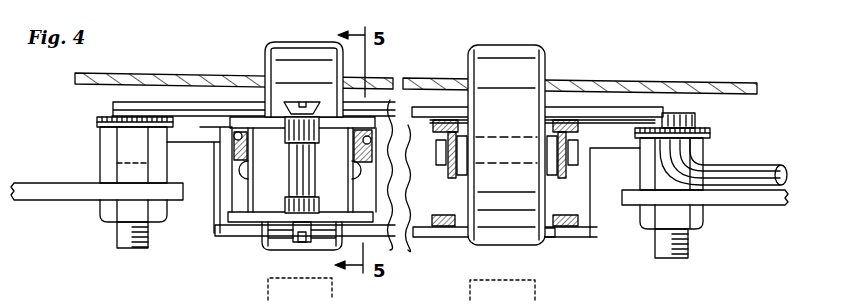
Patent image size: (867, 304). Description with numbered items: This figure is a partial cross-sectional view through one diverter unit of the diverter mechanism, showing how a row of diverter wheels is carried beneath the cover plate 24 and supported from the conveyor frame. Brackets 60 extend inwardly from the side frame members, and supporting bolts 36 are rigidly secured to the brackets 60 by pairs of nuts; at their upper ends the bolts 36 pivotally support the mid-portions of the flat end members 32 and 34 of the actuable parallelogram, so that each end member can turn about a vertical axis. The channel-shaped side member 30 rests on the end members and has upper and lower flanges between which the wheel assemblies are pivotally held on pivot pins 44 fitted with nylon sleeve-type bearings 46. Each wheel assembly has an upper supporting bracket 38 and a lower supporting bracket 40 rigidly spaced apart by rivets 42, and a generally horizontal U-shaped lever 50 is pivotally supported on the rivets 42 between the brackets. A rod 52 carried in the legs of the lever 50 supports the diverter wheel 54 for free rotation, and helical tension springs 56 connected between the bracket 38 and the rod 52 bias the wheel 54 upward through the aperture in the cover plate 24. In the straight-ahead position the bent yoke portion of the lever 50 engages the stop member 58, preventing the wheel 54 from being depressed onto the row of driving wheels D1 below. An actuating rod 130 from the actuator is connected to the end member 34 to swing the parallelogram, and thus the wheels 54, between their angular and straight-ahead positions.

The cover plate 24 is at (629, 83).
The side member 30 is at (420, 232).
The end member 32 is at (97, 122).
The end member 34 is at (710, 132).
The bearing bolt 36 is at (150, 238).
The upper supporting bracket 38 is at (232, 120).
The lower supporting bracket 40 is at (246, 237).
The rivet 42 is at (235, 216).
The pivot pin 44 is at (296, 248).
The sleeve-type bearing 46 is at (333, 203).
The U-shaped lever 50 is at (240, 190).
The rod 52 is at (232, 165).
The diverter wheel 54 is at (277, 52).
The helical tension spring 56 is at (224, 143).
The stop member 58 is at (550, 236).
The bracket 60 is at (51, 182).
The actuating rod 130 is at (745, 170).
The row of driving wheels D1 is at (535, 282).